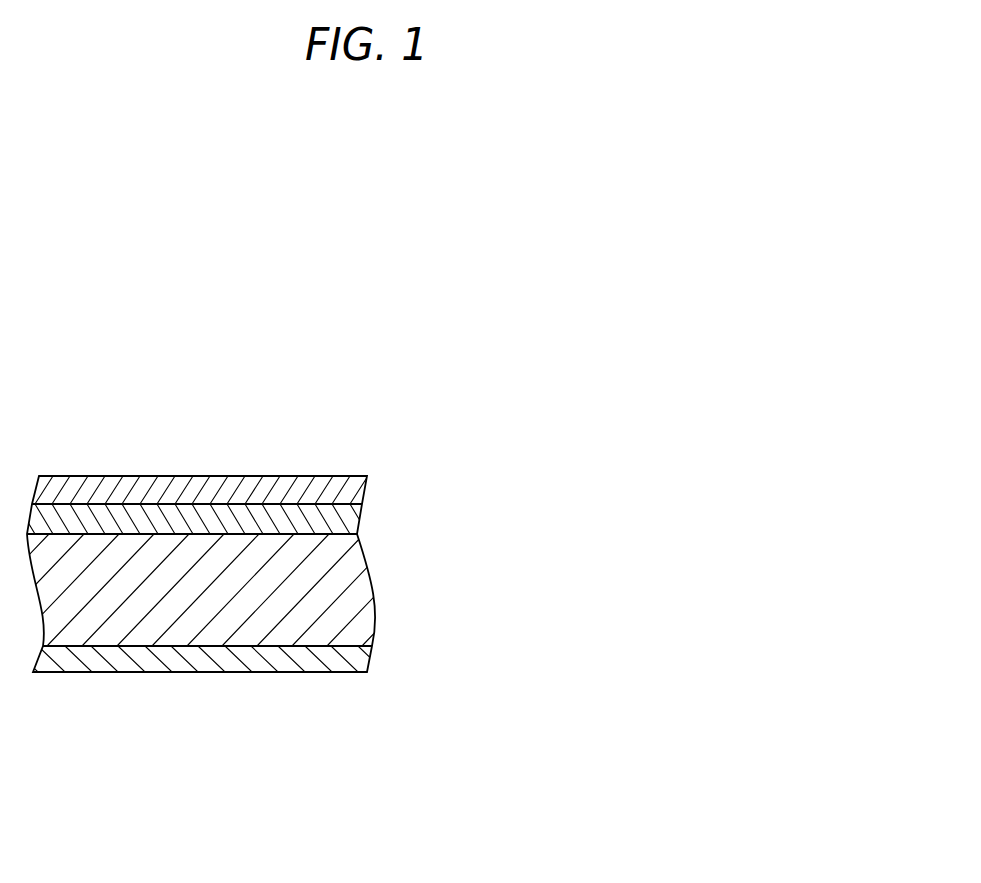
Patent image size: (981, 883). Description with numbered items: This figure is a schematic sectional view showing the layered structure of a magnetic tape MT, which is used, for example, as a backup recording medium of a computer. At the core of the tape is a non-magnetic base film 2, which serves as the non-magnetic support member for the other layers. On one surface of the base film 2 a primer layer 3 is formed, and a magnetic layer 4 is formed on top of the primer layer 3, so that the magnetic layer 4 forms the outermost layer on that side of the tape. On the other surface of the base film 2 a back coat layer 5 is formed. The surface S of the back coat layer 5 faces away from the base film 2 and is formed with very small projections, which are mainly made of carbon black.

The magnetic tape MT is at (234, 446).
The magnetic layer 4 is at (353, 493).
The primer layer 3 is at (354, 520).
The non-magnetic base film 2 is at (360, 590).
The back coat layer 5 is at (363, 660).
The surface of the back coat layer S is at (202, 673).